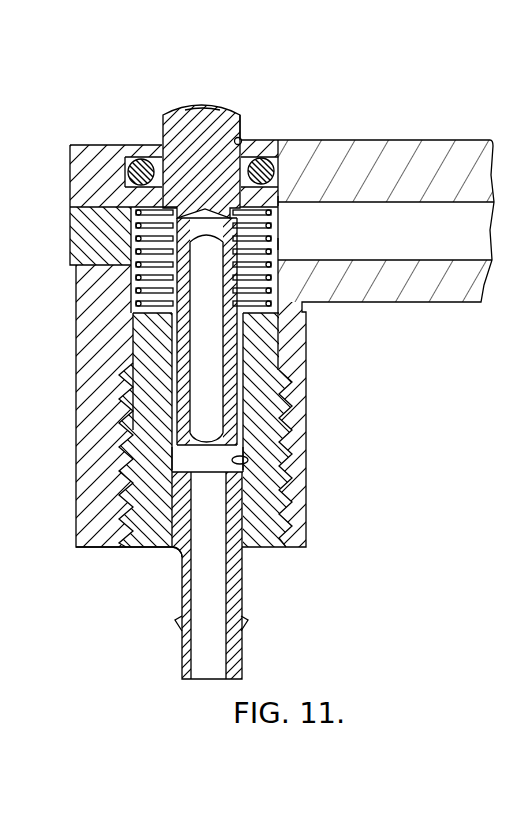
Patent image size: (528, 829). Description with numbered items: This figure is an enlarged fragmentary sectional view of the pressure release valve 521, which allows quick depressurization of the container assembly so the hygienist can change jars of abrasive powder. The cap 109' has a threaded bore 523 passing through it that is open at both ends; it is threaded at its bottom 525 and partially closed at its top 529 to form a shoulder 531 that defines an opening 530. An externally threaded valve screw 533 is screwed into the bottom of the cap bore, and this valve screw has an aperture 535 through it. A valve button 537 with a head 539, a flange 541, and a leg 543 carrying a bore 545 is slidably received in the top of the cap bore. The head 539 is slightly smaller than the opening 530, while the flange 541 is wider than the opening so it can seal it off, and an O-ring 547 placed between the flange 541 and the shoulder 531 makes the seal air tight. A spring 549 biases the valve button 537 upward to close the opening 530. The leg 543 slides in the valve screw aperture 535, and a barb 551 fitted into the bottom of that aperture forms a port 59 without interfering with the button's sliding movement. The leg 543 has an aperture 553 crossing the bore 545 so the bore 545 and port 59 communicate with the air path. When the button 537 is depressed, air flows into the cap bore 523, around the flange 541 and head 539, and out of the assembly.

The cap 109' is at (378, 312).
The pressure release valve 521 is at (253, 112).
The threaded bore 523 is at (133, 312).
The bottom of bore 525 is at (125, 366).
The top of bore 529 is at (138, 157).
The opening 530 is at (243, 139).
The shoulder 531 is at (273, 158).
The valve screw 533 is at (176, 548).
The aperture 535 is at (248, 458).
The valve button 537 is at (210, 106).
The head 539 is at (188, 104).
The flange 541 is at (279, 198).
The leg 543 is at (240, 406).
The bore 545 is at (207, 459).
The O-ring 547 is at (150, 163).
The spring 549 is at (279, 243).
The barb 551 is at (241, 580).
The aperture 553 is at (140, 234).
The port 59 is at (241, 632).